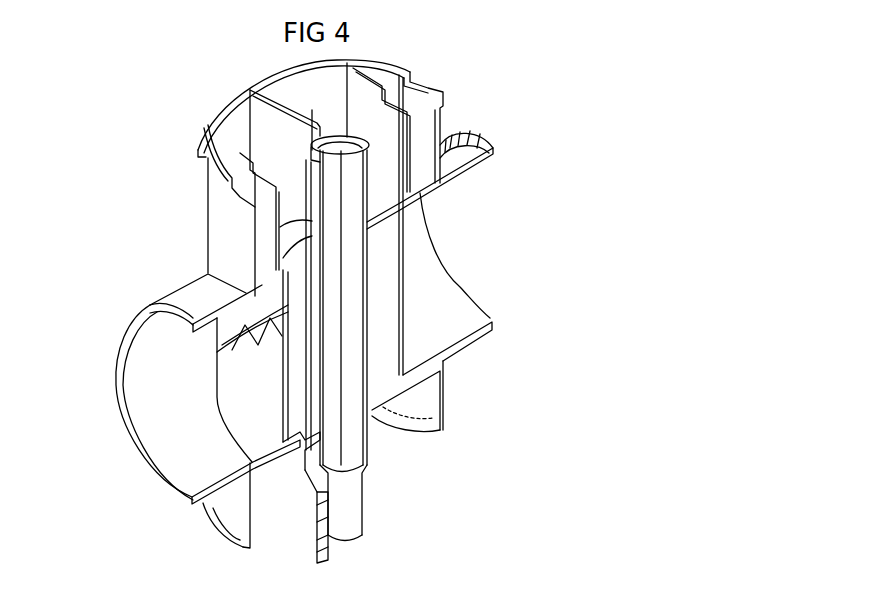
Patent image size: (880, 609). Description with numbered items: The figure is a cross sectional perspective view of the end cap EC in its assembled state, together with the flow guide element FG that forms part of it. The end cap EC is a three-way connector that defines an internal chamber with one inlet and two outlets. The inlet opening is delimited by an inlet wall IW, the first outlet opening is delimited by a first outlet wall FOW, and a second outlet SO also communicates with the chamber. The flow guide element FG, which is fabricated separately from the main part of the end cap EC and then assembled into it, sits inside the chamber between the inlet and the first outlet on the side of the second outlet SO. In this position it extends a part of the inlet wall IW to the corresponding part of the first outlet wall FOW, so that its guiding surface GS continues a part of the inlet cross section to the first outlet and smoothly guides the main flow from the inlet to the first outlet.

The end cap EC is at (338, 63).
The first outlet wall FOW is at (462, 317).
The guiding surface GS is at (255, 413).
The second outlet SO is at (407, 455).
The inlet wall IW is at (210, 468).
The flow guide element FG is at (273, 437).